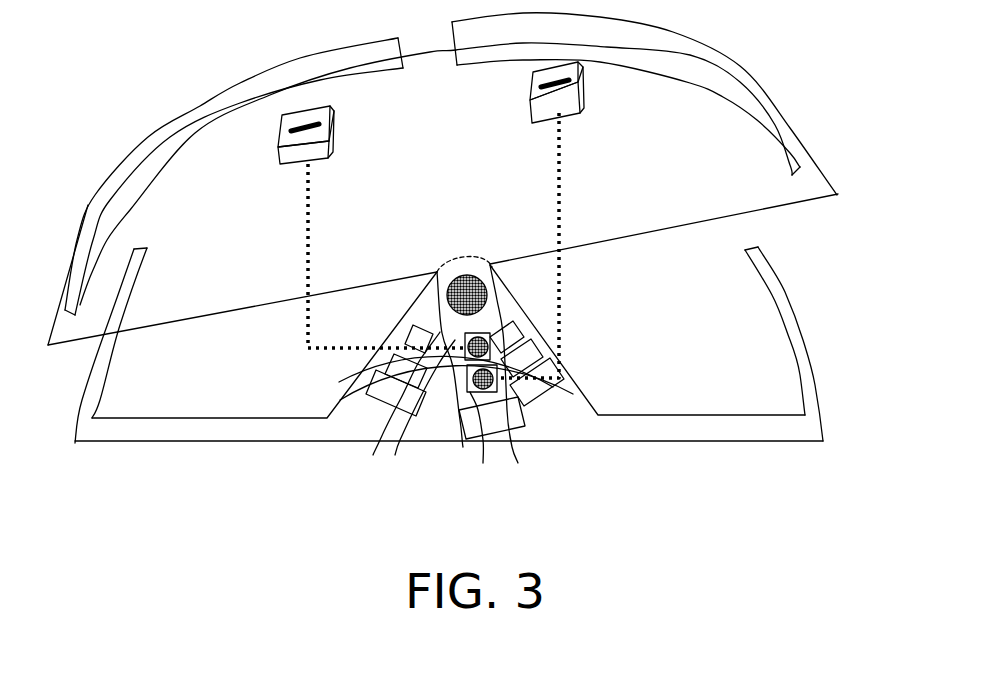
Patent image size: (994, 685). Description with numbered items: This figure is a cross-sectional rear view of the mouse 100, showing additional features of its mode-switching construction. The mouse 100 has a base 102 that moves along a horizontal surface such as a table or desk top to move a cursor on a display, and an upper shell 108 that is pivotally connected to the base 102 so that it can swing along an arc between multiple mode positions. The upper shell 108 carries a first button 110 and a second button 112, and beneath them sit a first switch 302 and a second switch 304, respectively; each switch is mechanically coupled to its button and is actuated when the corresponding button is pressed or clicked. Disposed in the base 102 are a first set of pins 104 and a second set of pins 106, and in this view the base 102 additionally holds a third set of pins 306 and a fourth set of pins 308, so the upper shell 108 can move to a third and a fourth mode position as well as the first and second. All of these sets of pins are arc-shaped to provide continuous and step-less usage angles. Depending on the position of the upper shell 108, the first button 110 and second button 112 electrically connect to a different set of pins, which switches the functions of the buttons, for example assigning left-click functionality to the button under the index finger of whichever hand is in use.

The mouse 100 is at (706, 512).
The base 102 is at (817, 418).
The first set of pins 104 is at (408, 459).
The second set of pins 106 is at (528, 467).
The upper shell 108 is at (815, 141).
The first button 110 is at (150, 133).
The second button 112 is at (675, 33).
The first switch 302 is at (277, 137).
The second switch 304 is at (583, 97).
The third set of pins 306 is at (405, 338).
The fourth set of pins 308 is at (523, 326).